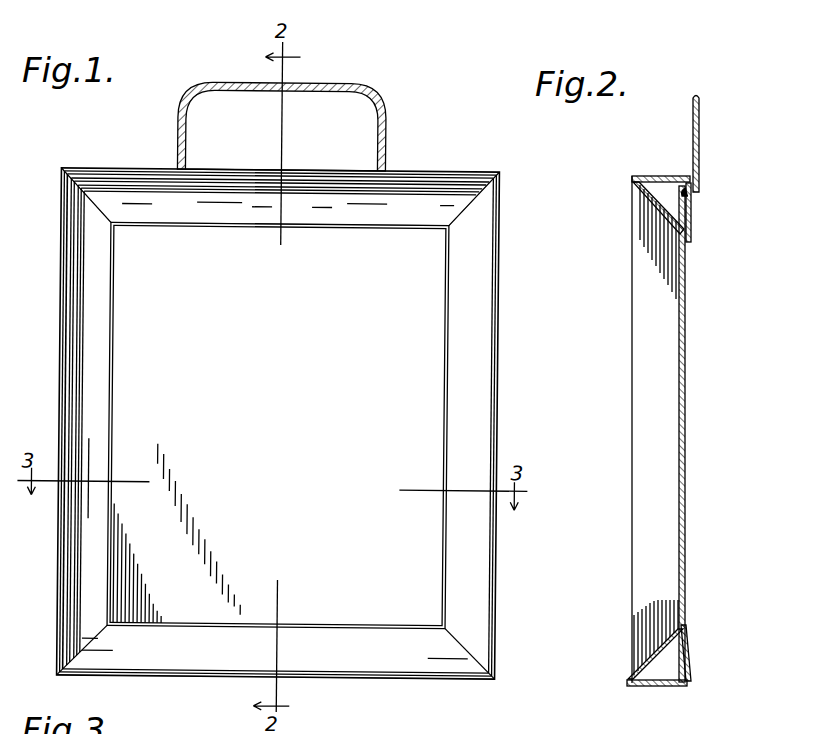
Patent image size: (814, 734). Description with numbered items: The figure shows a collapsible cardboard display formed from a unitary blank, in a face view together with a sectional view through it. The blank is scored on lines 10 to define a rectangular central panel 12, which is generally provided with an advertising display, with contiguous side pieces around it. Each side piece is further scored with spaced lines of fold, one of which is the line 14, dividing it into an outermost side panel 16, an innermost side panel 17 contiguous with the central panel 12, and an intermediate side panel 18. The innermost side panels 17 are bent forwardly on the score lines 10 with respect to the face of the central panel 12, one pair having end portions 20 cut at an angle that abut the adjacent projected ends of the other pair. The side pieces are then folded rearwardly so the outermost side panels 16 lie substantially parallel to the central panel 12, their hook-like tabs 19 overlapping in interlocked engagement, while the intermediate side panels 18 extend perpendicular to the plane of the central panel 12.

In FIG. 1, the score lines 10 is at (443, 401).
In FIG. 1, the central panel 12 is at (312, 386).
In FIG. 2, the central panel 12 is at (690, 355).
In FIG. 1, the line of fold 14 is at (498, 378).
In FIG. 2, the line of fold 14 is at (696, 144).
In FIG. 2, the outermost side panel 16 is at (693, 238).
In FIG. 1, the innermost side panel 17 is at (333, 212).
In FIG. 2, the innermost side panel 17 is at (650, 205).
In FIG. 1, the intermediate side panel 18 is at (380, 679).
In FIG. 2, the intermediate side panel 18 is at (652, 177).
In FIG. 2, the hook-like tabs 19 is at (695, 230).
In FIG. 1, the end portions 20 is at (110, 208).